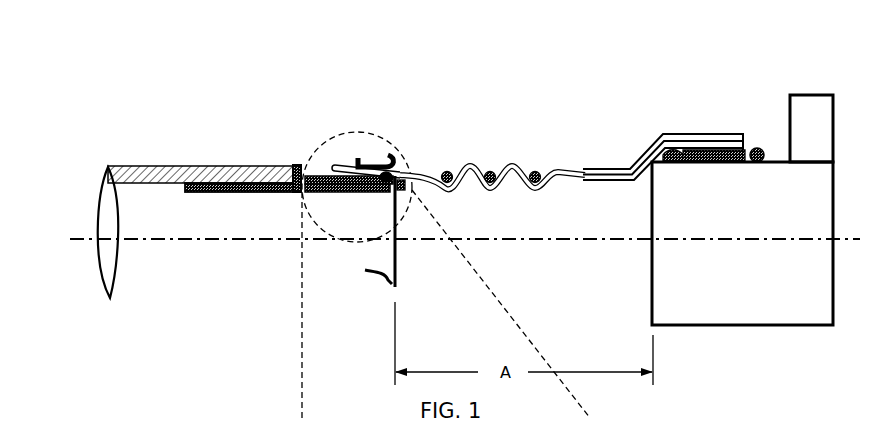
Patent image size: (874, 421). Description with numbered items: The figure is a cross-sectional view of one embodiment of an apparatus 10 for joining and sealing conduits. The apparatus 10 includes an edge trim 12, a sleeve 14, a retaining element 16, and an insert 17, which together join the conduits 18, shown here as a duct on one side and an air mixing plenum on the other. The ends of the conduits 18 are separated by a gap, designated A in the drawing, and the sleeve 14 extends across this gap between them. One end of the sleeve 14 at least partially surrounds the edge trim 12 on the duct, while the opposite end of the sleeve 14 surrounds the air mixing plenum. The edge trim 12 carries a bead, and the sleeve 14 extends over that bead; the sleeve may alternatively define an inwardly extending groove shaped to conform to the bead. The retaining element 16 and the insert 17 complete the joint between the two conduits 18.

The apparatus for joining and sealing conduits 10 is at (475, 143).
The edge trim 12 is at (320, 175).
The sleeve 14 is at (555, 163).
The retaining element 16 is at (362, 157).
The insert 17 is at (315, 194).
The conduits 18 is at (158, 168).